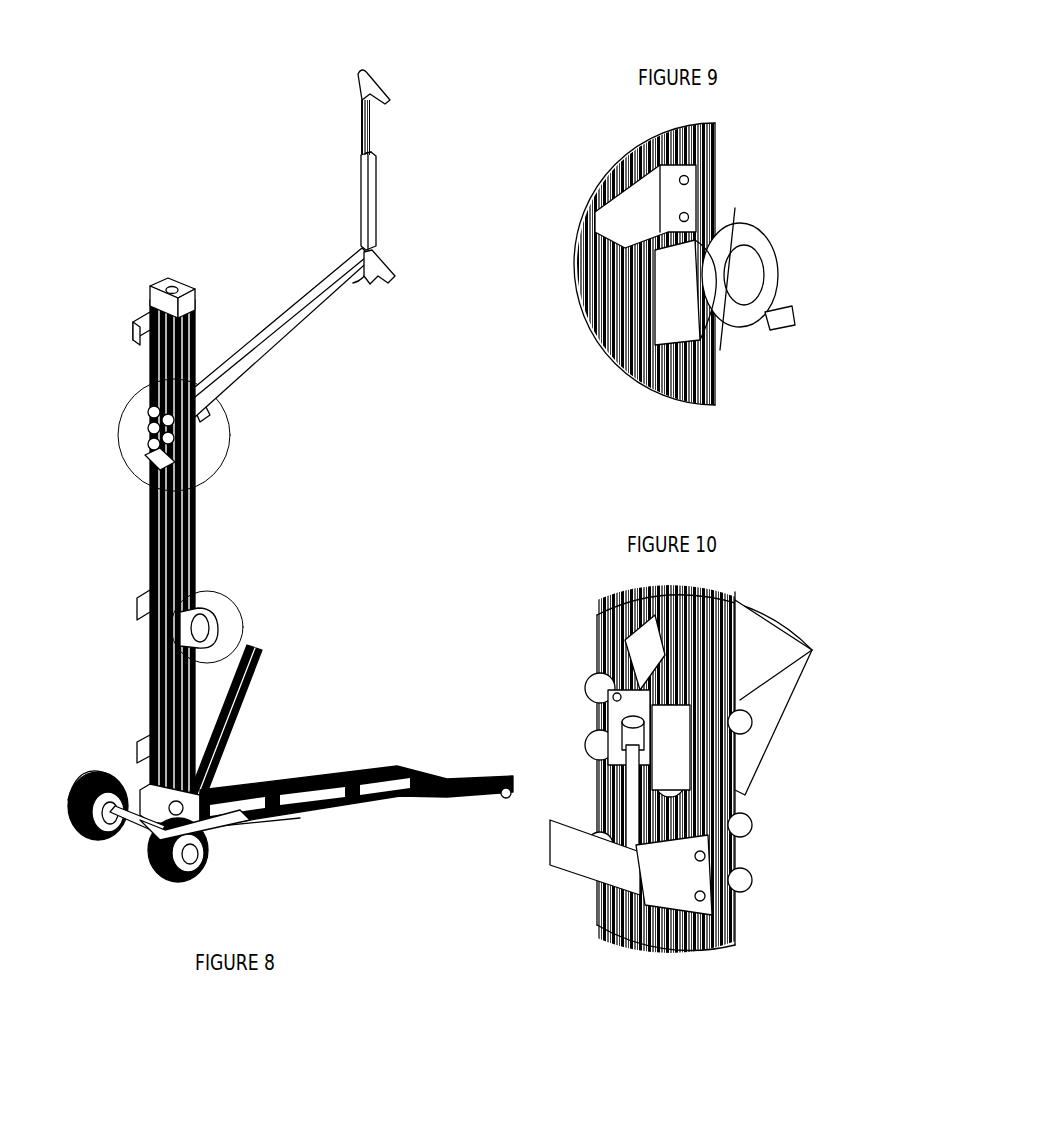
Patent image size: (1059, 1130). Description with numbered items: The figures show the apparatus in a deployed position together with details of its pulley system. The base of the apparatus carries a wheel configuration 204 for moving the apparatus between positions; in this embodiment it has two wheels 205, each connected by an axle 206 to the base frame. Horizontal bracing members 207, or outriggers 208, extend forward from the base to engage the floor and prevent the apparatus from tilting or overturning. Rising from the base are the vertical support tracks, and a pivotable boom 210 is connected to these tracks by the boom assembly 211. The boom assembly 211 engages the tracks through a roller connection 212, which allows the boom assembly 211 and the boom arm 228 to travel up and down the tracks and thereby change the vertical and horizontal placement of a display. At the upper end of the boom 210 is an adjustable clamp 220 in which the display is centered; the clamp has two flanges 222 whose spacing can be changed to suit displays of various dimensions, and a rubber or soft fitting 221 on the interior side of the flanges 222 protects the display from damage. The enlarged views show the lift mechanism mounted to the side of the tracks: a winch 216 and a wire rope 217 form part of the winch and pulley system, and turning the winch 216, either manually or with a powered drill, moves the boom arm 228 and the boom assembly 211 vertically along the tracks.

In FIG. 8, the wheel configuration 204 is at (156, 920).
In FIG. 8, the wheels 205 is at (99, 840).
In FIG. 8, the axle 206 is at (131, 826).
In FIG. 8, the horizontal bracing members 207 is at (405, 820).
In FIG. 8, the outriggers 208 is at (340, 790).
In FIG. 8, the pivotable boom 210 is at (245, 330).
In FIG. 8, the boom assembly 211 is at (121, 445).
In FIG. 8, the roller connection 212 is at (148, 416).
In FIG. 10, the roller connection 212 is at (592, 689).
In FIG. 8, the winch 216 is at (222, 614).
In FIG. 9, the winch 216 is at (661, 320).
In FIG. 9, the wire rope 217 is at (719, 178).
In FIG. 8, the adjustable clamp 220 is at (375, 183).
In FIG. 8, the rubber or soft fitting 221 is at (385, 275).
In FIG. 8, the flanges 222 is at (372, 88).
In FIG. 8, the boom arm 228 is at (200, 419).